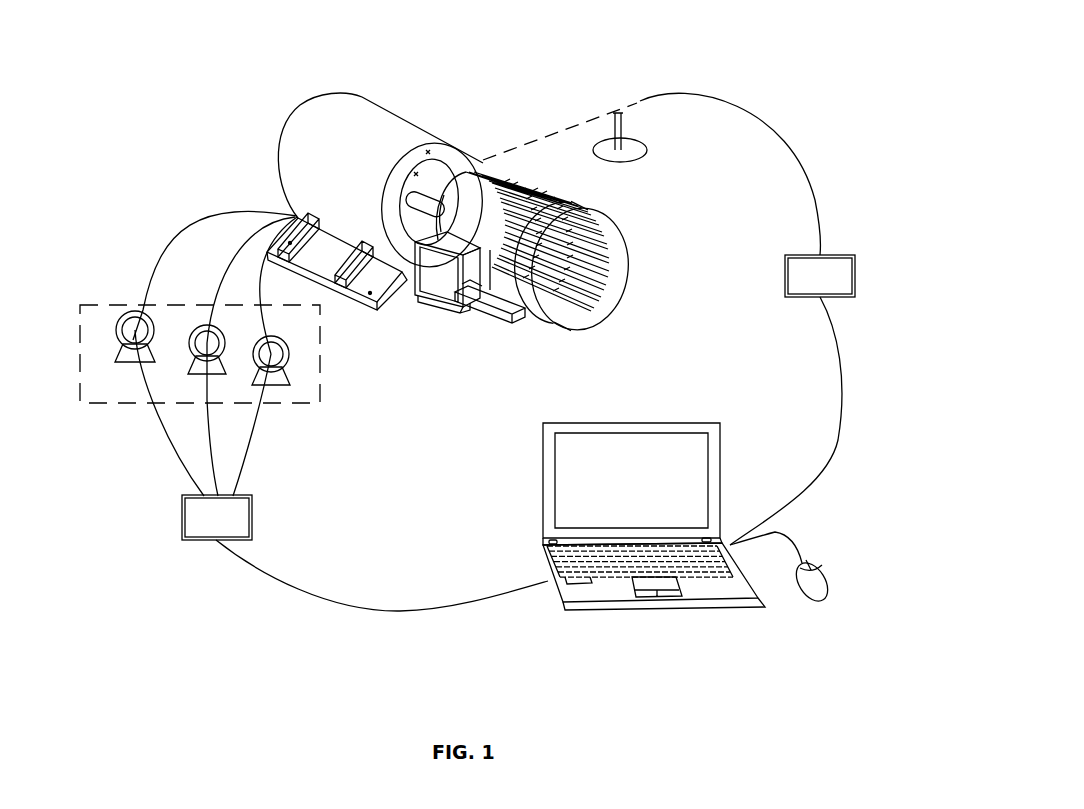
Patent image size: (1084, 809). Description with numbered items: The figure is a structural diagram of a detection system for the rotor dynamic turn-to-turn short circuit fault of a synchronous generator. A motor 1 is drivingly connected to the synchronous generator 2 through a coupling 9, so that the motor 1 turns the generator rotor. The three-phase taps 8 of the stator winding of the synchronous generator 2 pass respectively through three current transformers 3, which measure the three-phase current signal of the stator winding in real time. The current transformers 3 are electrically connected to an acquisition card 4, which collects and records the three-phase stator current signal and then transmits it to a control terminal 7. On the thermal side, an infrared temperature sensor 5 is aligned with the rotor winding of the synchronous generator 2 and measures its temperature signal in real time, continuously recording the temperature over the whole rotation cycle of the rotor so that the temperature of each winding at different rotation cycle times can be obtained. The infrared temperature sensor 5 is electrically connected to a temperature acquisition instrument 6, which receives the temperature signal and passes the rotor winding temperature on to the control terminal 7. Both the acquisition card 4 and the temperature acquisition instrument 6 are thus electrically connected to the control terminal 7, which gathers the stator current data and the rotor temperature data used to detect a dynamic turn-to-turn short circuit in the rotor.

The motor 1 is at (602, 210).
The synchronous generator 2 is at (353, 137).
The current transformer 3 is at (117, 303).
The acquisition card 4 is at (202, 540).
The infrared temperature sensor 5 is at (660, 93).
The temperature acquisition instrument 6 is at (853, 300).
The control terminal 7 is at (620, 421).
The three-phase taps 8 is at (296, 214).
The coupling 9 is at (450, 195).